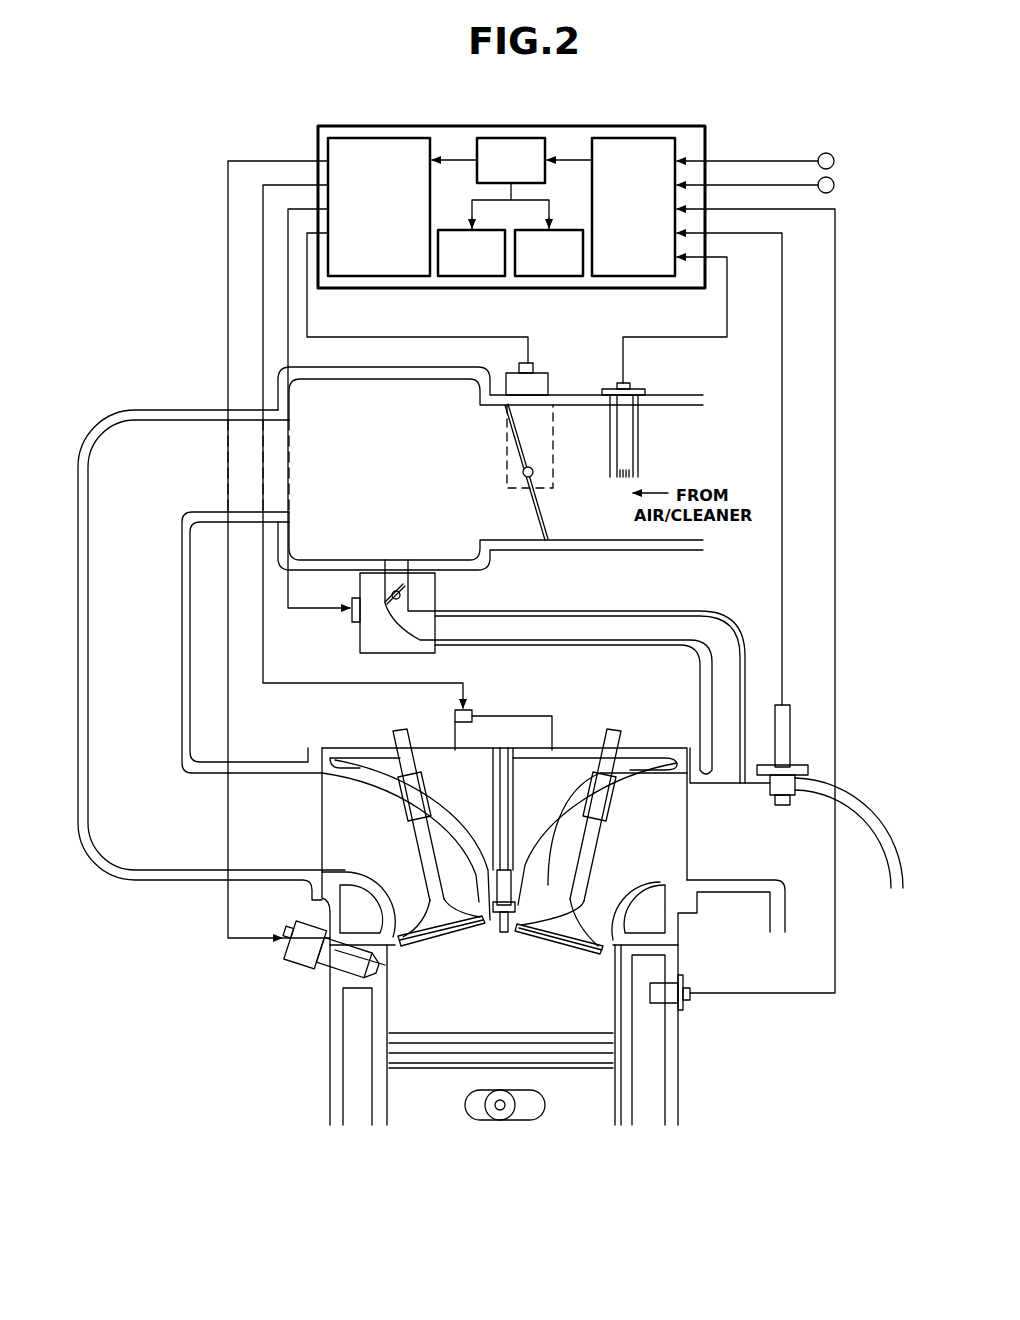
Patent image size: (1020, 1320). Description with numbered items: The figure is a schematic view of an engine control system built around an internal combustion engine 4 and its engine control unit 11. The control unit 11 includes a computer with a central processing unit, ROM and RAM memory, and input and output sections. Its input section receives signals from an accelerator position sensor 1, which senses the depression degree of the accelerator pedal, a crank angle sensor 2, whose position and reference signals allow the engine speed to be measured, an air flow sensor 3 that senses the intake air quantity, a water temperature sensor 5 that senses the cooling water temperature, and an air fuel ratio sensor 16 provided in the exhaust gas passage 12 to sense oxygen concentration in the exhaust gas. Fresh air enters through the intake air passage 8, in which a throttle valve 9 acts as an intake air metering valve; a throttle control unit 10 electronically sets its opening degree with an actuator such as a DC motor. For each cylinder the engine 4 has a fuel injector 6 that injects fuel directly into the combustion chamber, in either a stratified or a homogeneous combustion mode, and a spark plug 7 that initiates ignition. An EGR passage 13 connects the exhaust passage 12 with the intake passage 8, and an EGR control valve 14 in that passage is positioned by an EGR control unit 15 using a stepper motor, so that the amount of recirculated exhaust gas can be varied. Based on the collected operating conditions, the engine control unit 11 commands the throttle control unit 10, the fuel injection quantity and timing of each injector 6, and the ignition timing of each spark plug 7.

The accelerator position sensor 1 is at (834, 185).
The crank angle sensor 2 is at (834, 158).
The air flow sensor 3 is at (640, 430).
The internal combustion engine 4 is at (683, 1118).
The water temperature sensor 5 is at (660, 993).
The fuel injector 6 is at (305, 973).
The spark plug 7 is at (518, 903).
The intake air passage 8 is at (196, 408).
The throttle valve 9 is at (503, 428).
The throttle control unit 10 is at (552, 377).
The engine control unit 11 is at (710, 134).
The exhaust gas passage 12 is at (853, 802).
The EGR passage 13 is at (636, 607).
The EGR control valve 14 is at (410, 598).
The EGR control unit 15 is at (405, 648).
The air fuel ratio sensor 16 is at (784, 728).